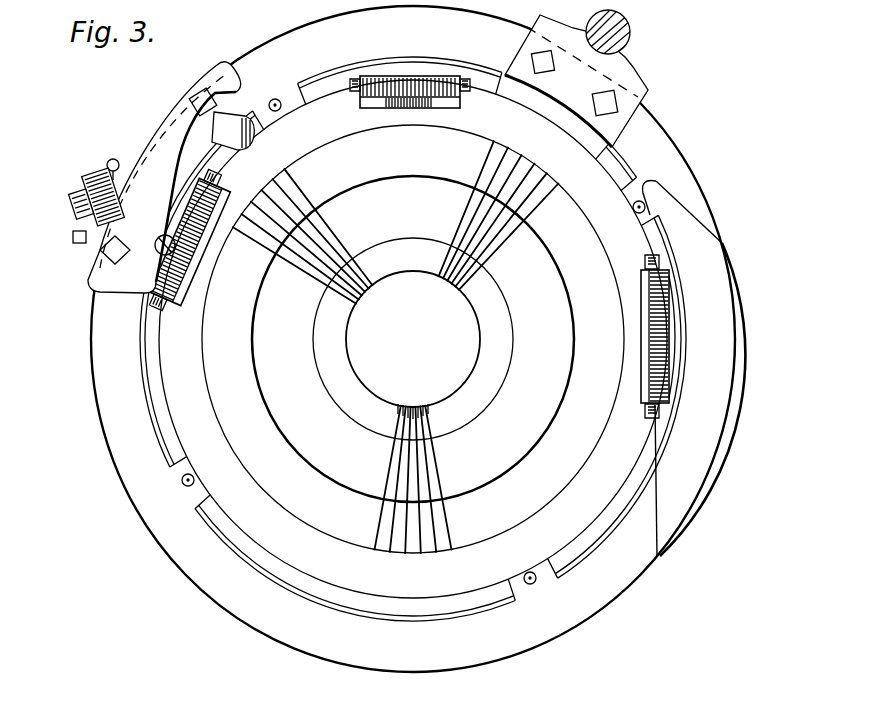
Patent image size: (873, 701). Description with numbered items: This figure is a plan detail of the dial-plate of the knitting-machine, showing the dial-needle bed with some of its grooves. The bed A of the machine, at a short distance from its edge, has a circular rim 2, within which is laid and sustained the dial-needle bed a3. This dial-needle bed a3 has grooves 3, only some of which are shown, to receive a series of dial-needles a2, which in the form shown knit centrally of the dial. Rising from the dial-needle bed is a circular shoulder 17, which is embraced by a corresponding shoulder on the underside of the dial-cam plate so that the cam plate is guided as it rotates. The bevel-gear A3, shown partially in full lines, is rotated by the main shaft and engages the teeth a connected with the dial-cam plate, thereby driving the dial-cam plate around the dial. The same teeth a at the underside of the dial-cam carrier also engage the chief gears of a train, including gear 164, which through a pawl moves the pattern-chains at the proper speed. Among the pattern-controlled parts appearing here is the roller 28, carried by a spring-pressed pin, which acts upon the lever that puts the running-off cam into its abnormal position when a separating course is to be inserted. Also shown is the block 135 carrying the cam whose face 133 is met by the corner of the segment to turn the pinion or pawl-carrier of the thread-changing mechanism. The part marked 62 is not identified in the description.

The bed A is at (690, 179).
The circular shoulder 17 is at (531, 449).
The teeth a is at (455, 697).
The dial-needle bed a3 is at (557, 212).
The dial-needles a2 is at (420, 403).
The grooves 3 is at (290, 194).
The circular rim 2 is at (613, 162).
The bevel-gear A3 is at (448, 80).
The gear 164 is at (157, 300).
The face of the cam 133 is at (655, 527).
The block 135 is at (731, 340).
The lever 62 is at (160, 134).
The roller 28 is at (158, 255).